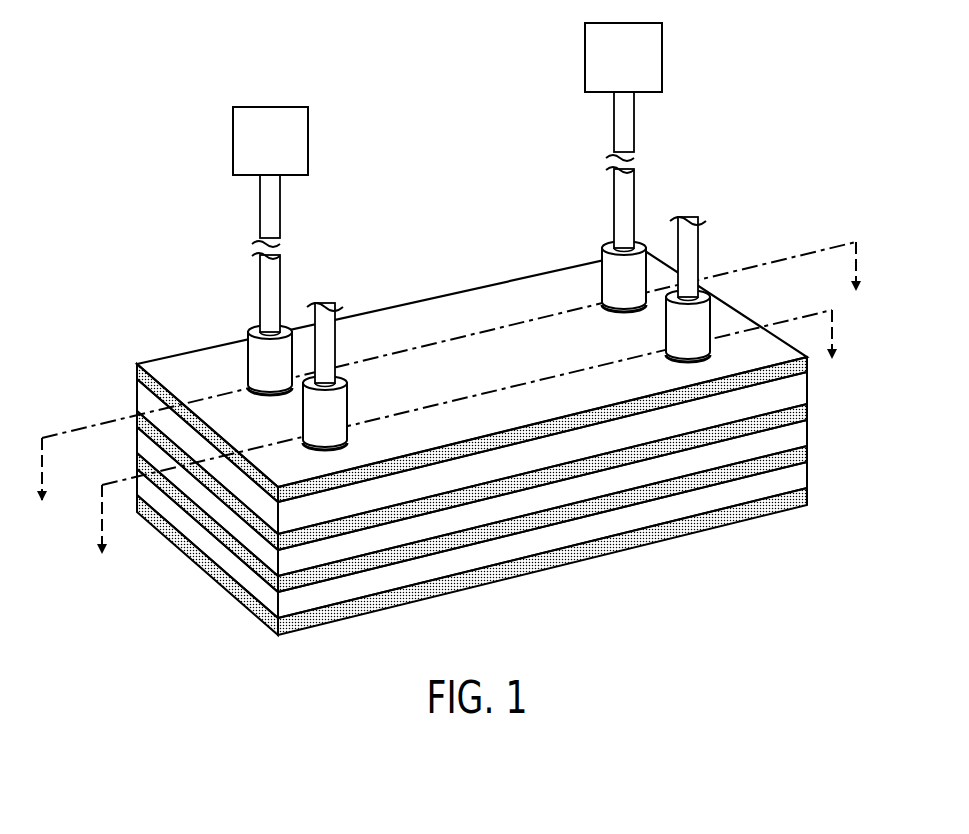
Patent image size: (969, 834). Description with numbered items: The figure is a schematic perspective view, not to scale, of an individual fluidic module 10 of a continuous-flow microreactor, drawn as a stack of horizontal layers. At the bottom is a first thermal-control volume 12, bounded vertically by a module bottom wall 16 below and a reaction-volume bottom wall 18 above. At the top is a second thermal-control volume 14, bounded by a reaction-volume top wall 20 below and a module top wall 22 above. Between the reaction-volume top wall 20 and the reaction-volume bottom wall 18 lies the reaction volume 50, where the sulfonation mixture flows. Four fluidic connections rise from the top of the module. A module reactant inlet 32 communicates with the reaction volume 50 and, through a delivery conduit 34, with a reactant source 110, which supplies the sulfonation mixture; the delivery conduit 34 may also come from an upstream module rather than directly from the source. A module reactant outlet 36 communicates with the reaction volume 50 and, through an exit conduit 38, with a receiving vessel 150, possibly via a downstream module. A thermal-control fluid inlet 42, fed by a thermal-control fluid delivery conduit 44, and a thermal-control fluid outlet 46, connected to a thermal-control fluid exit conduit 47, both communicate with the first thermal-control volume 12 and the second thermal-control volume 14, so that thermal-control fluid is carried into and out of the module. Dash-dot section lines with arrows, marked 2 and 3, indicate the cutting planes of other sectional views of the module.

The individual fluidic module 10 is at (452, 363).
The first thermal-control volume 12 is at (799, 472).
The second thermal-control volume 14 is at (799, 392).
The module bottom wall 16 is at (228, 582).
The reaction-volume bottom wall 18 is at (220, 530).
The reaction-volume top wall 20 is at (137, 422).
The module top wall 22 is at (137, 378).
The module reactant inlet 32 is at (250, 360).
The delivery conduit 34 is at (259, 312).
The module reactant outlet 36 is at (603, 270).
The exit conduit 38 is at (613, 227).
The thermal-control fluid inlet 42 is at (348, 405).
The thermal-control fluid delivery conduit 44 is at (336, 350).
The thermal-control fluid outlet 46 is at (712, 318).
The thermal-control fluid exit conduit 47 is at (699, 255).
The reaction volume 50 is at (799, 432).
The reactant source 110 is at (270, 141).
The receiving vessel 150 is at (623, 57).
The section line 2- 2 is at (452, 394).
The section line 3- 3 is at (466, 454).